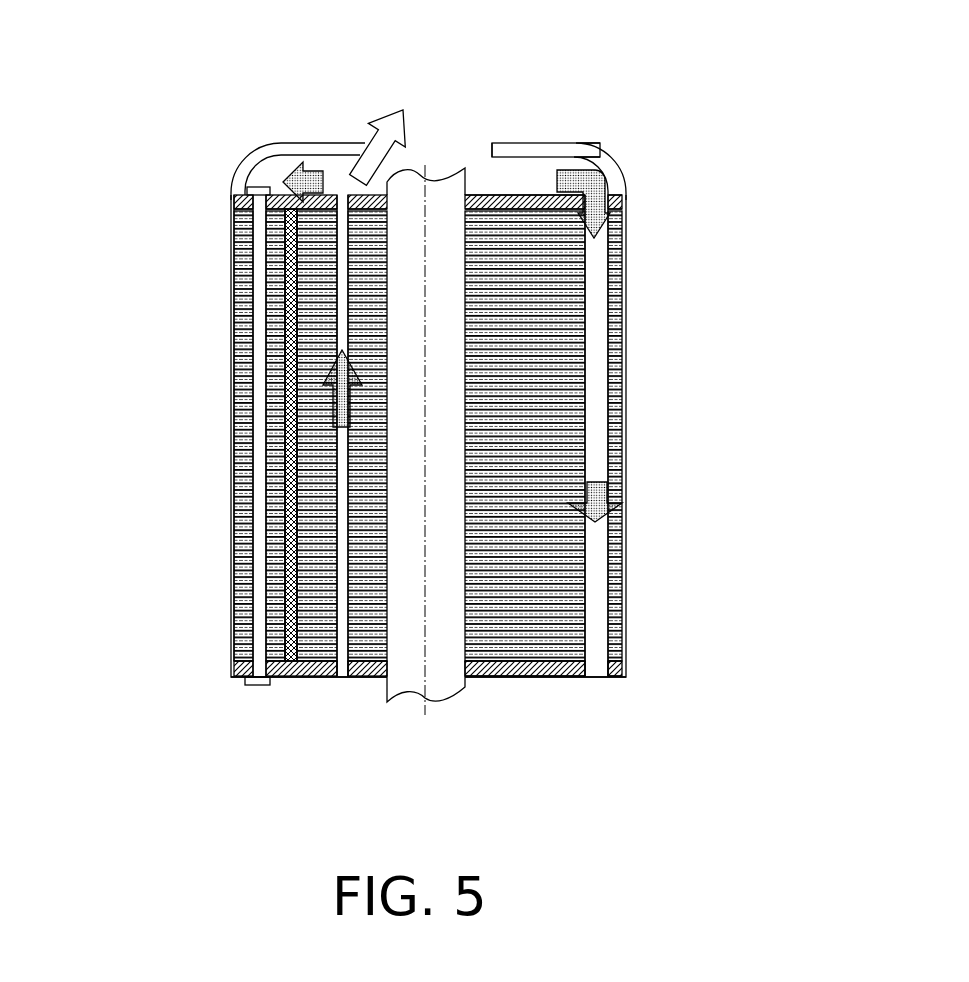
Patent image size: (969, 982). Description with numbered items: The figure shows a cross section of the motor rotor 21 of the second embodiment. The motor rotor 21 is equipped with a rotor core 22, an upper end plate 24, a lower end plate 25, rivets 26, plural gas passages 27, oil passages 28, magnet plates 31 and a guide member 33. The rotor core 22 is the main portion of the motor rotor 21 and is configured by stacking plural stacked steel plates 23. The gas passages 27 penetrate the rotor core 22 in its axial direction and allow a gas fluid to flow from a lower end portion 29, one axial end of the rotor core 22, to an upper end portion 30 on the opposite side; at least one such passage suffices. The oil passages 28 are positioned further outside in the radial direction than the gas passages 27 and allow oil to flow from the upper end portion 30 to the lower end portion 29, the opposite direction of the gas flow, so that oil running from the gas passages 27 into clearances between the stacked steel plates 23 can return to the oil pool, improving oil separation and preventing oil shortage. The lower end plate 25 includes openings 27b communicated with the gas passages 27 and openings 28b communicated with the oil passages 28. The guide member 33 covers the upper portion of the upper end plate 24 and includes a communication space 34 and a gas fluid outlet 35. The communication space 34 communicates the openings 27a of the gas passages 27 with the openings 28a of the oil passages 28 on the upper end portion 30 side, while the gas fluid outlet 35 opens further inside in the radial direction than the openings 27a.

The motor rotor 21 is at (704, 84).
The rotor core 22 is at (230, 505).
The stacked steel plates 23 is at (273, 453).
The upper end plate 24 is at (503, 198).
The lower end plate 25 is at (517, 680).
The rivets 26 is at (260, 390).
The gas passages 27 is at (338, 295).
The openings on the upper end portion side of the gas passages 27a is at (343, 203).
The openings communicated with the gas passages 27b is at (340, 675).
The oil passages 28 is at (592, 383).
The openings on the upper end portion side of the oil passages 28a is at (622, 193).
The openings communicated with the oil passages 28b is at (598, 675).
The lower end portion 29 is at (318, 675).
The upper end portion 30 is at (280, 157).
The magnet plates 31 is at (287, 323).
The guide member 33 is at (541, 146).
The communication space 34 is at (550, 172).
The gas fluid outlet 35 is at (479, 142).